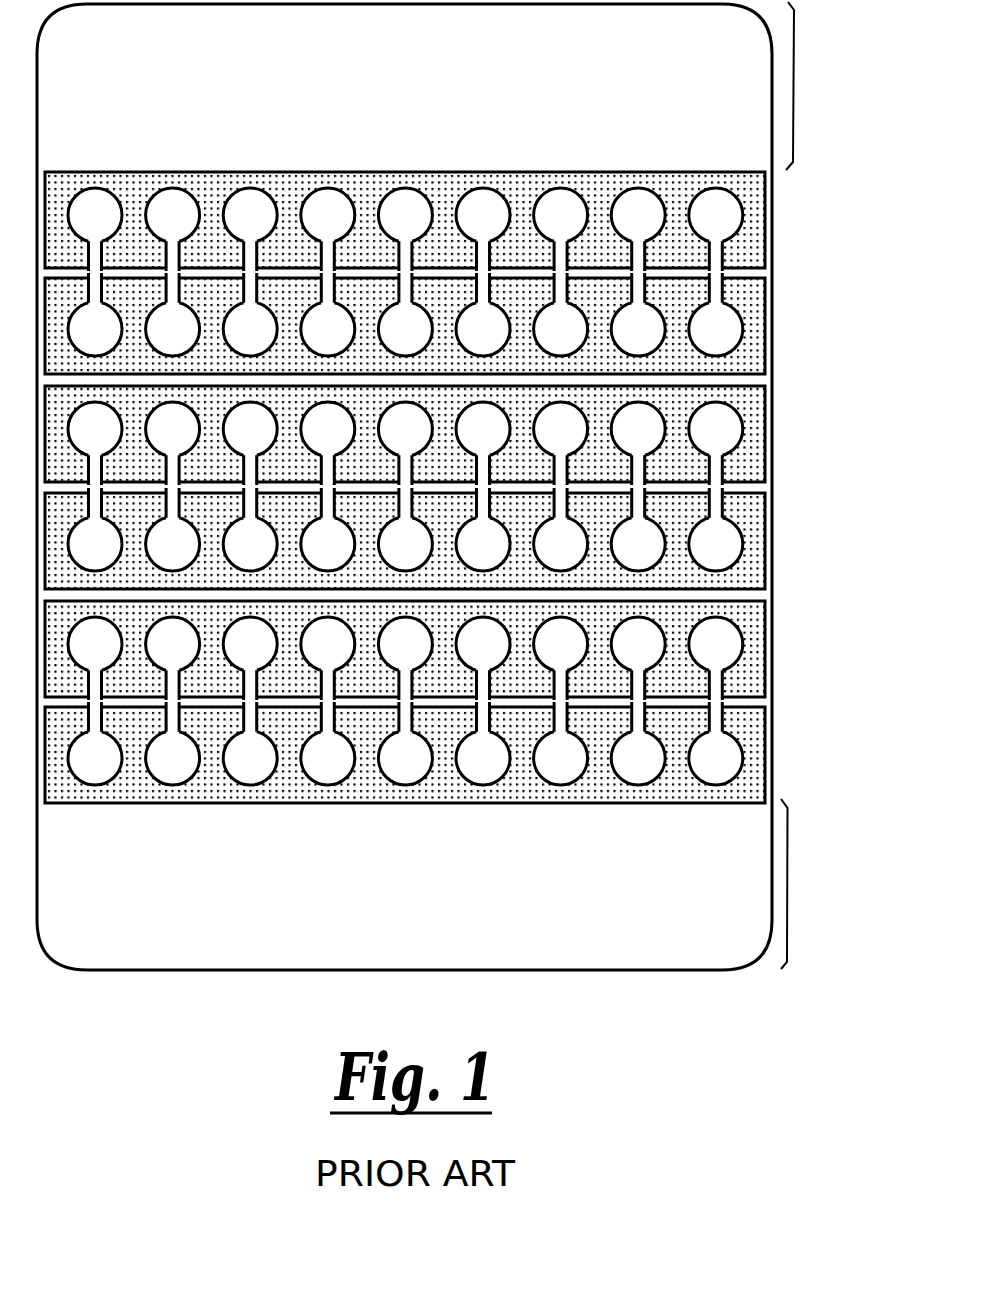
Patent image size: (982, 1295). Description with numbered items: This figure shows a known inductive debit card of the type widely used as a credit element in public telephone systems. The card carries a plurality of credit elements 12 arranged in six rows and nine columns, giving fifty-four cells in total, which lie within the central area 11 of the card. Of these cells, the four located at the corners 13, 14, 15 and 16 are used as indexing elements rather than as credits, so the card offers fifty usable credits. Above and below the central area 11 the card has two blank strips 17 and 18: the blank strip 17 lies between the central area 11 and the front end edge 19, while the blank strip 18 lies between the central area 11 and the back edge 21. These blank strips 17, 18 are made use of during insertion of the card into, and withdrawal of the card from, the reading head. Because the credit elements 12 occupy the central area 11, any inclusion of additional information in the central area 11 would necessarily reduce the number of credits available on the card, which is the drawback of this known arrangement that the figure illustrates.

The central area 11 is at (469, 470).
The credit elements 12 is at (485, 212).
The corner cell 13 is at (102, 212).
The corner cell 14 is at (708, 212).
The corner cell 15 is at (718, 762).
The corner cell 16 is at (97, 757).
The blank strip 17 is at (793, 83).
The blank strip 18 is at (787, 882).
The front end edge 19 is at (350, 4).
The back edge 21 is at (508, 968).